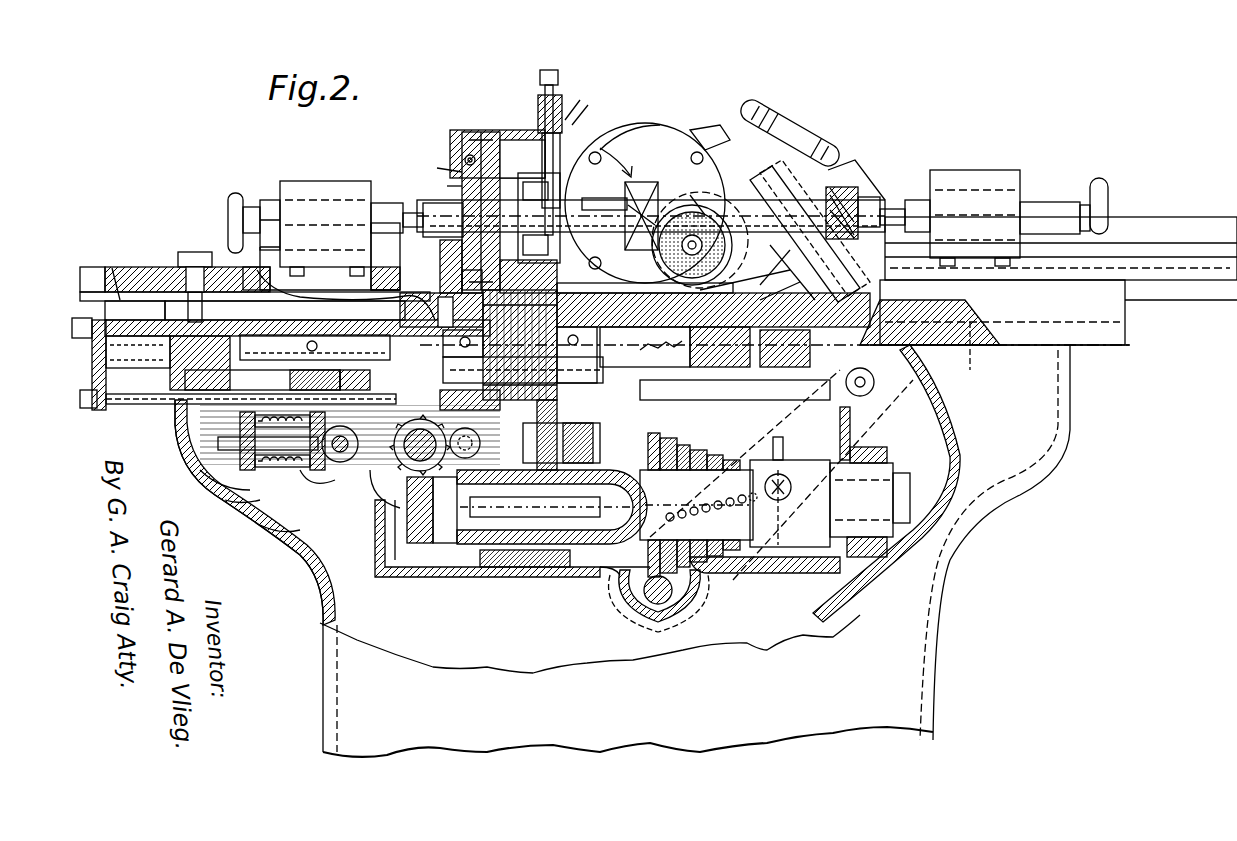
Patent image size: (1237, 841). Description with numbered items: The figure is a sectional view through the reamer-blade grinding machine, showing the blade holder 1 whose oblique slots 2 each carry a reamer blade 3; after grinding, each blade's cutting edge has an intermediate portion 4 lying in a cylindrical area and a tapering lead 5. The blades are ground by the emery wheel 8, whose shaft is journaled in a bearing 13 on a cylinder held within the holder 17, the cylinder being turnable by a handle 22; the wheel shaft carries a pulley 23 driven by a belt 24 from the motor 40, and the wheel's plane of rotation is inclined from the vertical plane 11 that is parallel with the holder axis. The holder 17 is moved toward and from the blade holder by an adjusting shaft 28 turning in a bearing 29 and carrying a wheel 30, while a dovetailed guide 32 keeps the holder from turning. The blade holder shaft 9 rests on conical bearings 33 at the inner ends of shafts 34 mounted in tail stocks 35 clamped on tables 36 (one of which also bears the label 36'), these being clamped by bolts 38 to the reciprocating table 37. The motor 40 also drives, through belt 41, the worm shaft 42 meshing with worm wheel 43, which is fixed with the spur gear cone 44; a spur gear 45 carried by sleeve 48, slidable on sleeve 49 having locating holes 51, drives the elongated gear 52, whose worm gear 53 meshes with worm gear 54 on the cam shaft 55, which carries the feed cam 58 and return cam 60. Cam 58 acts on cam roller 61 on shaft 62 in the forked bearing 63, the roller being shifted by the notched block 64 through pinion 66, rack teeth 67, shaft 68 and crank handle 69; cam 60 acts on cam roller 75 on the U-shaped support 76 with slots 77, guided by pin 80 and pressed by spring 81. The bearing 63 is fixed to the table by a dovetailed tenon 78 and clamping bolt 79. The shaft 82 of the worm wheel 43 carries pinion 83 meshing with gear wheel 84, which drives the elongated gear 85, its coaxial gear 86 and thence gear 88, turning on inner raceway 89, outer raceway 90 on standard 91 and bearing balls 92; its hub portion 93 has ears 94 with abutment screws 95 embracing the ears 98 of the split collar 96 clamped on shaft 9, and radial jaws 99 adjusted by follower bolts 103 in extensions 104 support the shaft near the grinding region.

The blade holder 1 is at (648, 180).
The slots 2 is at (628, 204).
The reamer blade 3 is at (612, 700).
The intermediate portion 4 is at (400, 450).
The lead 5 is at (163, 320).
The emery wheel 8 is at (784, 258).
The shaft 9 is at (696, 194).
The vertical plane 11 is at (478, 620).
The bearing 13 is at (648, 135).
The holder 17 is at (712, 118).
The handle 22 is at (600, 125).
The pulley 23 is at (660, 270).
The driving belt 24 is at (757, 272).
The adjusting shaft 28 is at (776, 361).
The bearing 29 is at (840, 165).
The wheel 30 is at (820, 118).
The dovetailed guide 32 is at (222, 220).
The conical bearings 33 is at (880, 200).
The shafts 34 is at (905, 210).
The tail stocks 35 is at (978, 175).
The tables 36 is at (658, 240).
The bed plate 36' is at (100, 273).
The table 37 is at (1130, 303).
The bolts 38 is at (170, 280).
The motor 40 is at (935, 372).
The belt 41 is at (755, 595).
The shaft 42 is at (640, 598).
The worm wheel 43 is at (645, 365).
The spur gear cone 44 is at (690, 460).
The spur gear 45 is at (790, 445).
The sleeve 48 is at (820, 548).
The sleeve 49 is at (610, 600).
The holes 51 is at (725, 500).
The gear 52 is at (652, 468).
The worm gear 53 is at (380, 540).
The worm gear 54 is at (405, 415).
The shaft 55 is at (380, 470).
The cam 58 is at (375, 500).
The cam 60 is at (487, 527).
The cam roller 61 is at (315, 485).
The shaft 62 is at (340, 462).
The forked bearing 63 is at (280, 380).
The notched block 64 is at (271, 539).
The pinion 66 is at (364, 382).
The rack teeth 67 is at (462, 280).
The shaft 68 is at (160, 404).
The crank handle 69 is at (138, 362).
The cam roller 75 is at (540, 447).
The U-shaped support 76 is at (240, 428).
The slots 77 is at (640, 360).
The dovetailed tenon 78 is at (315, 347).
The clamping bolt 79 is at (307, 346).
The guide pin 80 is at (205, 480).
The spring 81 is at (237, 517).
The shaft 82 is at (585, 577).
The pinion 83 is at (540, 507).
The gear wheel 84 is at (535, 410).
The gear 85 is at (483, 390).
The gear 86 is at (395, 390).
The gear 88 is at (485, 132).
The inner raceway 89 is at (437, 162).
The outer raceway 90 is at (468, 155).
The standard 91 is at (441, 182).
The bearing balls 92 is at (465, 158).
The hub portion 93 is at (505, 150).
The ears 94 is at (585, 218).
The abutment screws 95 is at (585, 184).
The split collar 96 is at (645, 284).
The ear 98 is at (440, 210).
The radial jaws 99 is at (597, 195).
The follower bolts 103 is at (553, 70).
The extensions 104 is at (560, 95).